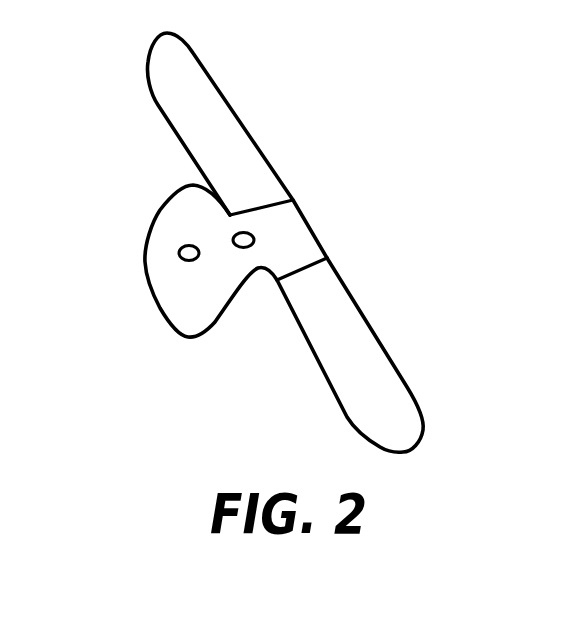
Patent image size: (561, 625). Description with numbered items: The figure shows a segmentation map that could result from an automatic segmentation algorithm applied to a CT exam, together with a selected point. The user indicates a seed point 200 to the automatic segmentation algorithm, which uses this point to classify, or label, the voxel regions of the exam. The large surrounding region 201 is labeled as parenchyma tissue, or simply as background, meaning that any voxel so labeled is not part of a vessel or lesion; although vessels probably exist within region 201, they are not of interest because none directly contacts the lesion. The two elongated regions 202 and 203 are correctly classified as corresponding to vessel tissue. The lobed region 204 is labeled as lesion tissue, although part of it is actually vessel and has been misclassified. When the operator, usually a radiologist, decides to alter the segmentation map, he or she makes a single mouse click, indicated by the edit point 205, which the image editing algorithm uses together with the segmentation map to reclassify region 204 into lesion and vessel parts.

The region 201 is at (518, 80).
The region 202 is at (214, 78).
The region 203 is at (410, 388).
The region 204 is at (143, 240).
The seed point 200 is at (180, 256).
The edit point 205 is at (252, 250).